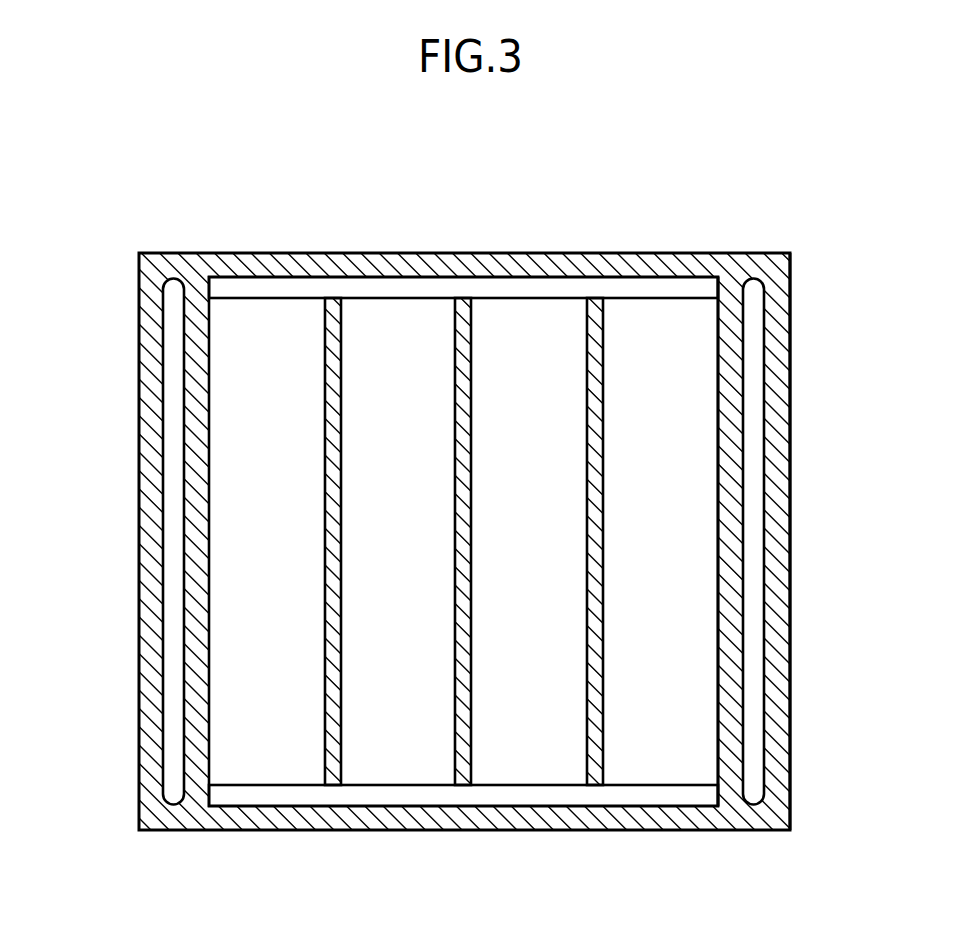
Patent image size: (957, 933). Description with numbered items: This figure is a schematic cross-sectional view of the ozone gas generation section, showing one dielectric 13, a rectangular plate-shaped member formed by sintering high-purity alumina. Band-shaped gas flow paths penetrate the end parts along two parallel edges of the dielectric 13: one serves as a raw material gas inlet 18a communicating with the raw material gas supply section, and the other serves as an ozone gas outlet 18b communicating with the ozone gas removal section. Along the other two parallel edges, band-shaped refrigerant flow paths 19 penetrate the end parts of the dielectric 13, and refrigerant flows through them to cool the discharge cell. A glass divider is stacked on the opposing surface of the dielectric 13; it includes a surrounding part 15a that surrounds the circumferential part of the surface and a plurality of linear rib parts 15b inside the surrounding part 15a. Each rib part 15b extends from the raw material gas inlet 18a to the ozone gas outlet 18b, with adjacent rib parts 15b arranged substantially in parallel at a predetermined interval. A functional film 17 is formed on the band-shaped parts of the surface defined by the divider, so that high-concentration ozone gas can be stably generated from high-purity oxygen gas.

The dielectric 13 is at (520, 830).
The surrounding part 15a is at (754, 265).
The rib parts 15b is at (330, 716).
The functional film 17 is at (268, 335).
The raw material gas inlet 18a is at (655, 804).
The ozone gas outlet 18b is at (541, 280).
The refrigerant flow paths 19 is at (172, 392).